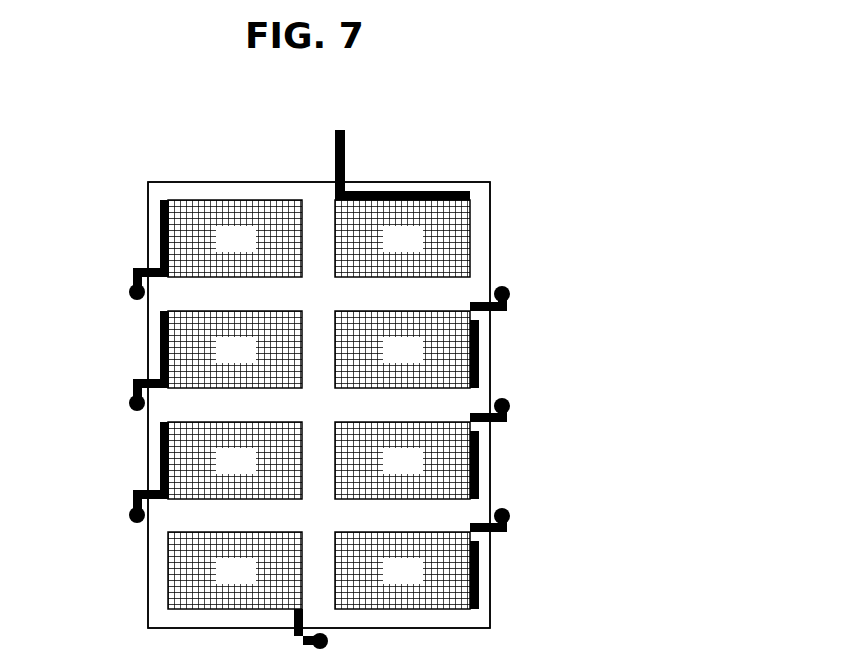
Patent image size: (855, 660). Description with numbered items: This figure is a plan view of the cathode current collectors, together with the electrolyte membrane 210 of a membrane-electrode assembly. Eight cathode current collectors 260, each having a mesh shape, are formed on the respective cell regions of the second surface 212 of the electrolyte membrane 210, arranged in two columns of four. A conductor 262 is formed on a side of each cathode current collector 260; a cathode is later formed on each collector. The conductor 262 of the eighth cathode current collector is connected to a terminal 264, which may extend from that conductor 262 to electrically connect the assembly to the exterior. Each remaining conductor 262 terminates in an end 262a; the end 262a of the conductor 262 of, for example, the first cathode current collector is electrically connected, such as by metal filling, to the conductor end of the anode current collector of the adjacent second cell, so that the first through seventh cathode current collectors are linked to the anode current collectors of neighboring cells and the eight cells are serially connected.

The electrolyte membrane 210 is at (470, 181).
The second surface 212 is at (319, 405).
The cathode current collector 260 is at (196, 200).
The conductor 262 is at (160, 234).
The end of the conductor 262a is at (130, 292).
The terminal 264 is at (339, 130).